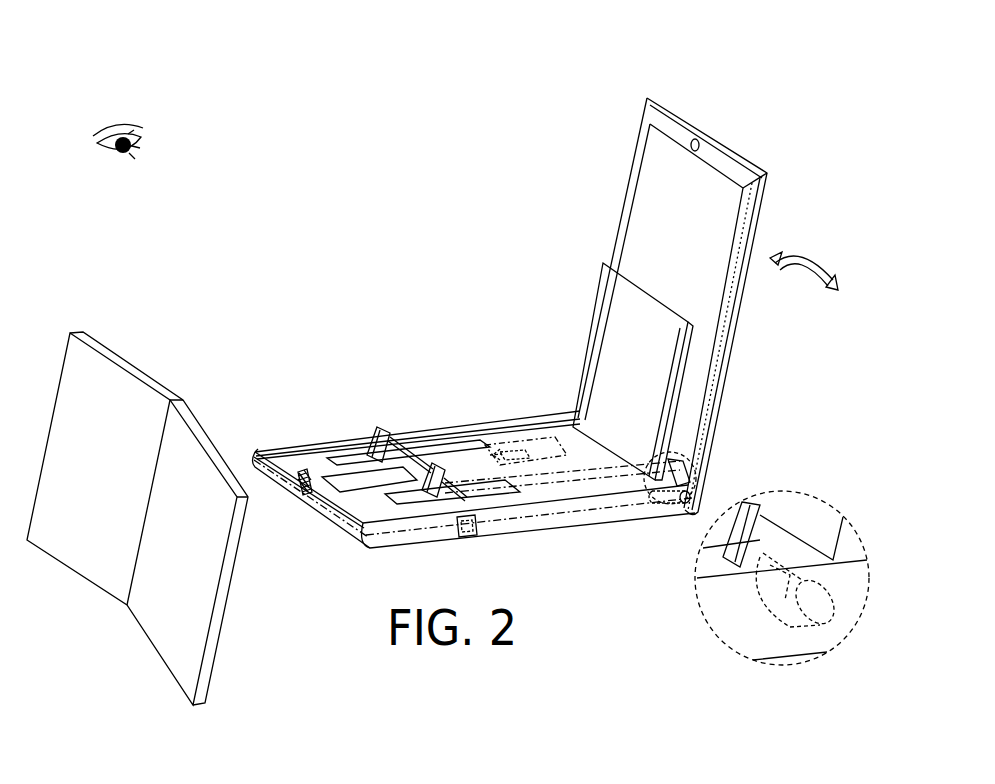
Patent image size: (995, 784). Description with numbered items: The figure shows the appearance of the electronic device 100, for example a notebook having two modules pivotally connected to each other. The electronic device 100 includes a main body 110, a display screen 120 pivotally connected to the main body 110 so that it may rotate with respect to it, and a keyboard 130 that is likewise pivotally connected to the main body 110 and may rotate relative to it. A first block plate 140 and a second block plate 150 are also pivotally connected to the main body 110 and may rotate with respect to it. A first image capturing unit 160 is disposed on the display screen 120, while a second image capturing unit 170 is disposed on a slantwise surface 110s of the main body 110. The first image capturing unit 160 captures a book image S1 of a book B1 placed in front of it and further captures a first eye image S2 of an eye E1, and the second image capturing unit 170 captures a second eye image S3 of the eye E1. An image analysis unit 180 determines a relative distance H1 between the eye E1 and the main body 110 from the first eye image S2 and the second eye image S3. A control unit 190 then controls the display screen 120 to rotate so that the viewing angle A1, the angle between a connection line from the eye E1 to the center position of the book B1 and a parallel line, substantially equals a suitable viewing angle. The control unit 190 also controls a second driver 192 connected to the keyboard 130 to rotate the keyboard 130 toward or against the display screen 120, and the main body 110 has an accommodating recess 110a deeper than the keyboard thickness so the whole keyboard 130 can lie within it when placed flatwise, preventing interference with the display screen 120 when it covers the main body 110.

The electronic device 100 is at (757, 157).
The main body 110 is at (556, 526).
The accommodating recess 110a is at (585, 478).
The slantwise surface 110s is at (254, 451).
The display screen 120 is at (737, 318).
The keyboard 130 is at (607, 307).
The first block plate 140 is at (436, 493).
The second block plate 150 is at (378, 434).
The first image capturing unit 160 is at (700, 138).
The second image capturing unit 170 is at (301, 494).
The image analysis unit 180 is at (478, 538).
The control unit 190 is at (485, 446).
The second driver 192 is at (762, 632).
The eye E1 is at (100, 122).
The book B1 is at (233, 597).
The relative distance H1 is at (697, 140).
The book image S1 is at (132, 145).
The first eye image S2 is at (410, 145).
The second eye image S3 is at (303, 483).
The viewing angle A1 is at (132, 148).